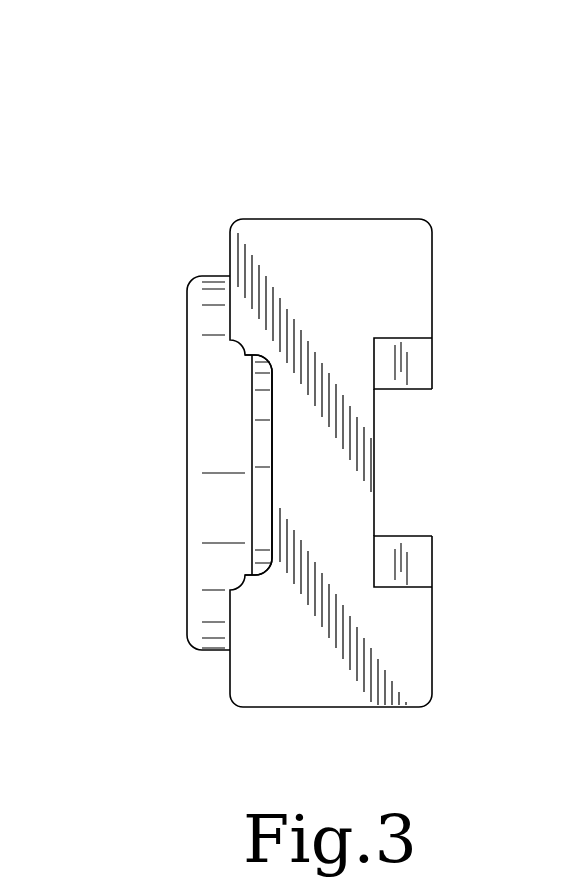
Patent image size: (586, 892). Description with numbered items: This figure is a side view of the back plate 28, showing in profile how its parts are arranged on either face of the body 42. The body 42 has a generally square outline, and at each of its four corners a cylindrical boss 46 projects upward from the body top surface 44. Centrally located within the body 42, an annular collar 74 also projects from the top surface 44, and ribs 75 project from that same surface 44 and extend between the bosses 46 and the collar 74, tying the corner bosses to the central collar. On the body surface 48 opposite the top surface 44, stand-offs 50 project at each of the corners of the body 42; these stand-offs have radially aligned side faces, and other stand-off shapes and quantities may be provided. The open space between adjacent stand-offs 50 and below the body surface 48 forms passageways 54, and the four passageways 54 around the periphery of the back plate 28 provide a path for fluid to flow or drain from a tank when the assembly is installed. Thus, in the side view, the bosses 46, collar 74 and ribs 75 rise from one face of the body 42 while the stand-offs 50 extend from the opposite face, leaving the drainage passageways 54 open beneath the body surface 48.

The back plate 28 is at (474, 140).
The body 42 is at (360, 528).
The body top surface 44 is at (272, 503).
The cylindrical boss 46 is at (297, 231).
The body surface 48 is at (375, 397).
The stand-off 50 is at (406, 233).
The passageway 54 is at (397, 466).
The annular collar 74 is at (203, 373).
The rib 75 is at (259, 404).